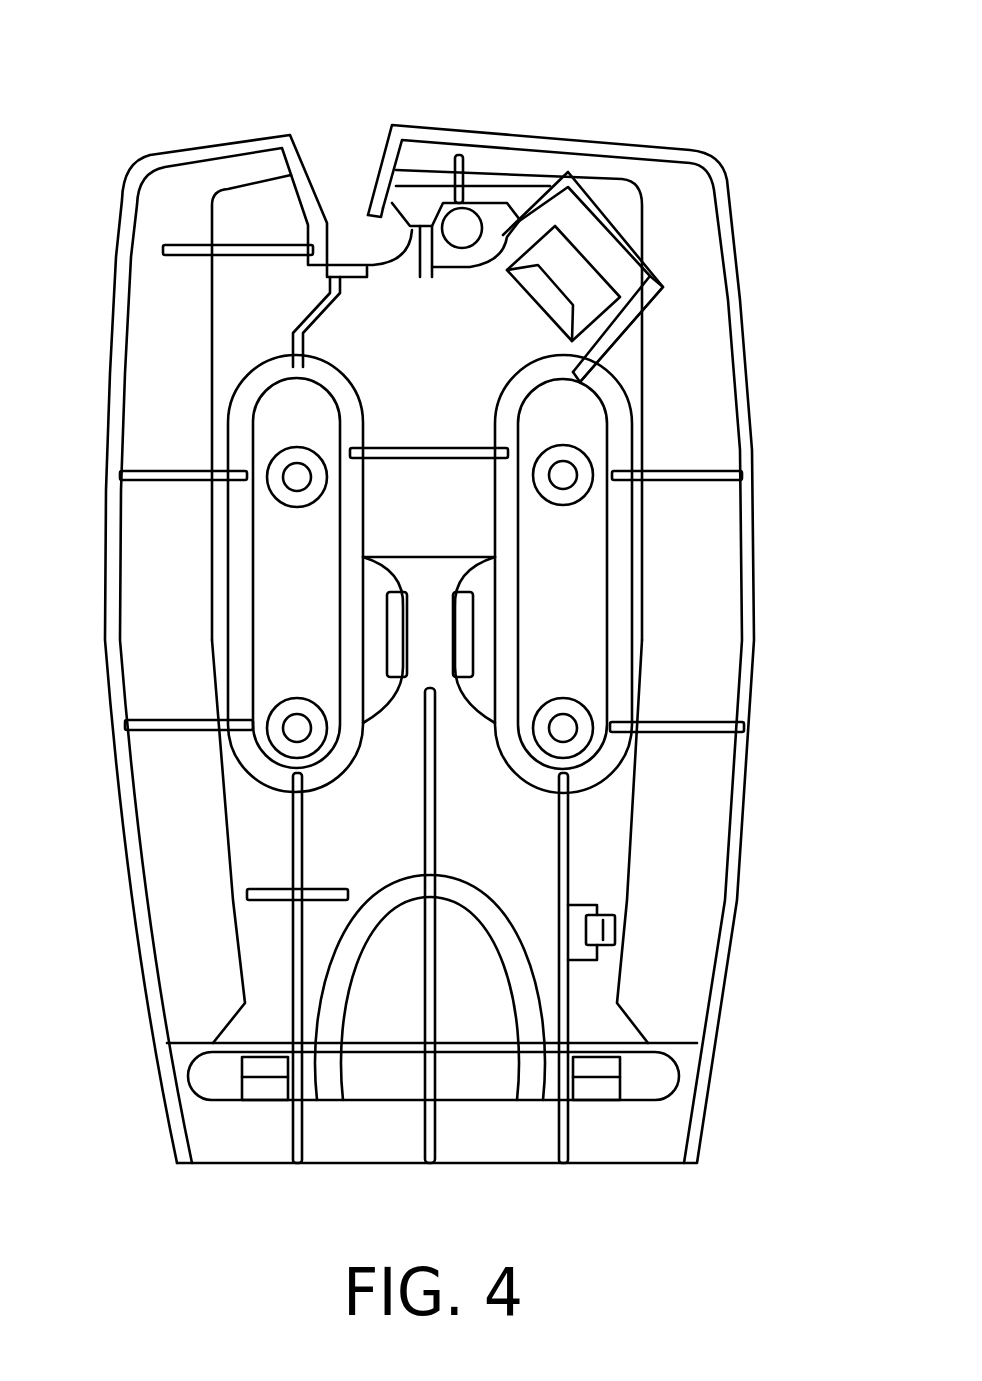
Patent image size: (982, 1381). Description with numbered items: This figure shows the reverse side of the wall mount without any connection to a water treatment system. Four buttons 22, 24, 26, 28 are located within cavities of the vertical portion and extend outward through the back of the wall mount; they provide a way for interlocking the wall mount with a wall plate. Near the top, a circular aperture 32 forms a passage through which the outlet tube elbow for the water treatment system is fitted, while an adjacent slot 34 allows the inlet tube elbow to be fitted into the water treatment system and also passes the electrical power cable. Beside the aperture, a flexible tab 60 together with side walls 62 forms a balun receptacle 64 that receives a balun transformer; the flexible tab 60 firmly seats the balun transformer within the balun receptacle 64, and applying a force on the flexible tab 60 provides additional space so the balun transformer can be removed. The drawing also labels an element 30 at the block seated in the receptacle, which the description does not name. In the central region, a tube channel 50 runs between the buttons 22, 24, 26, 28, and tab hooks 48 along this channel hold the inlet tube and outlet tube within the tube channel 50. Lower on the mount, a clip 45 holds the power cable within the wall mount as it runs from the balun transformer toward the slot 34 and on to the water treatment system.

The slot 34 is at (340, 158).
The circular aperture 32 is at (465, 222).
The side walls 62 is at (597, 210).
The block 30 is at (580, 280).
The flexible tab 60 is at (530, 302).
The balun receptacle 64 is at (645, 278).
The button 26 is at (297, 477).
The button 22 is at (563, 475).
The button 28 is at (297, 728).
The button 24 is at (563, 728).
The tube channel 50 is at (420, 503).
The tab hooks 48 is at (397, 643).
The clip 45 is at (610, 930).